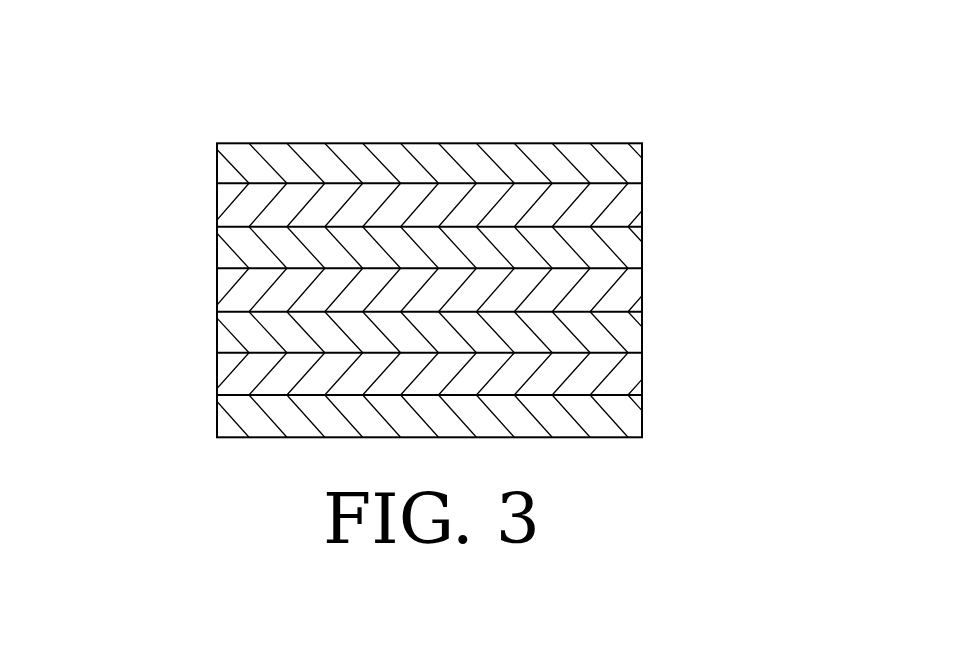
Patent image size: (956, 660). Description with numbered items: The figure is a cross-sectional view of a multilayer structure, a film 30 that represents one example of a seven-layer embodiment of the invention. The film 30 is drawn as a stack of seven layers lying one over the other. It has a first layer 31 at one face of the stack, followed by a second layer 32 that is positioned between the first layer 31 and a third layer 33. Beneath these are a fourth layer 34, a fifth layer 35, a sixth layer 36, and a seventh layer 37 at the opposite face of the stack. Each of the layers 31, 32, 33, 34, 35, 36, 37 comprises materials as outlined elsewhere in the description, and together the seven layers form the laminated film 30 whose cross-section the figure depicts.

The film 30 is at (398, 105).
The first layer 31 is at (655, 167).
The second layer 32 is at (203, 208).
The third layer 33 is at (655, 252).
The fourth layer 34 is at (203, 293).
The fifth layer 35 is at (655, 335).
The sixth layer 36 is at (203, 377).
The seventh layer 37 is at (655, 418).